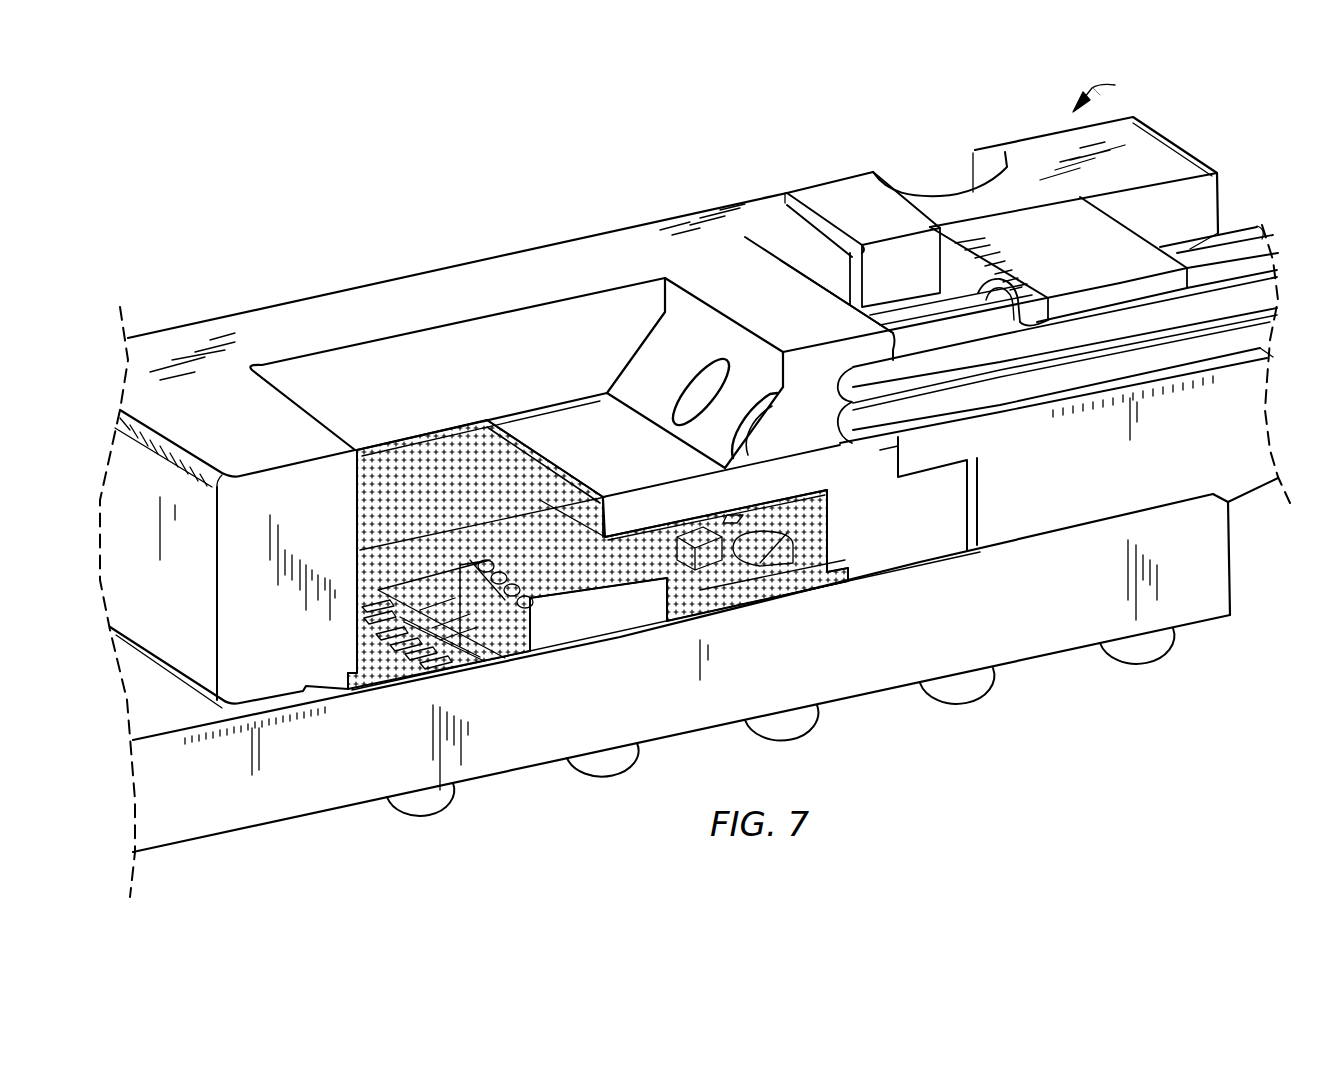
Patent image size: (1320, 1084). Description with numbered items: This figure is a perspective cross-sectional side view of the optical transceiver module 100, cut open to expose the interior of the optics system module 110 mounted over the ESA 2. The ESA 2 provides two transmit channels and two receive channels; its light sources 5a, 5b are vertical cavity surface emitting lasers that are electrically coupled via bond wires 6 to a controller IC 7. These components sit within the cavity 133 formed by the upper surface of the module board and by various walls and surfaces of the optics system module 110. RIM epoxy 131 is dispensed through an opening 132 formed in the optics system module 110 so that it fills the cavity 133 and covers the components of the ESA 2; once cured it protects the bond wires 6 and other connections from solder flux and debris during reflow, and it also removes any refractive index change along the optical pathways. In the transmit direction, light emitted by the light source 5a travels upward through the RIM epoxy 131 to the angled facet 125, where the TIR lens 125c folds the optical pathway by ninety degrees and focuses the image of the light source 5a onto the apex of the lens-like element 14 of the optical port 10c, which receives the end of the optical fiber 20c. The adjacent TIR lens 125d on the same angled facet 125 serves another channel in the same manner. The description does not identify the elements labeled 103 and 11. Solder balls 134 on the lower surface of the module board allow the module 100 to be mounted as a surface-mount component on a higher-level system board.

The optical transceiver module 100 is at (1111, 95).
The lid / cover 103 is at (828, 197).
The optics system module 110 is at (278, 322).
The angled facet 125 is at (675, 338).
The TIR lens 125c is at (740, 438).
The TIR lens 125d is at (678, 397).
The plate 11 is at (862, 360).
The lens-like element 14 is at (855, 380).
The optical port 10c is at (857, 455).
The optical fiber 20c is at (1222, 257).
The opening 132 is at (386, 448).
The RIM epoxy 131 is at (427, 457).
The controller IC 7 is at (567, 587).
The bond wires 6 is at (507, 647).
The light source 5b is at (730, 517).
The light source 5a is at (735, 541).
The cavity 133 is at (808, 580).
The ESA 2 is at (1213, 557).
The solder balls 134 is at (430, 812).